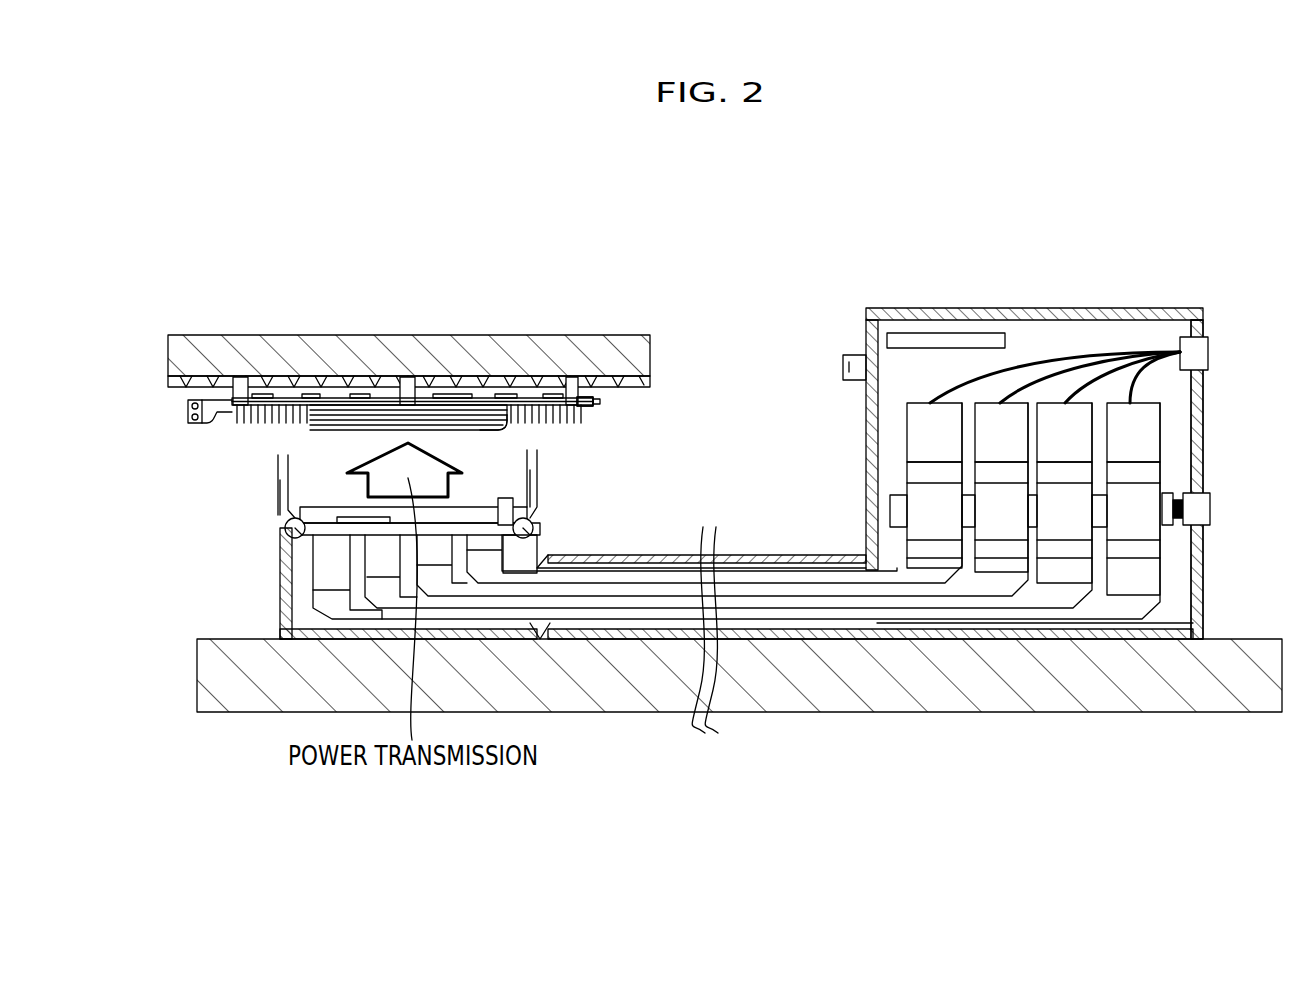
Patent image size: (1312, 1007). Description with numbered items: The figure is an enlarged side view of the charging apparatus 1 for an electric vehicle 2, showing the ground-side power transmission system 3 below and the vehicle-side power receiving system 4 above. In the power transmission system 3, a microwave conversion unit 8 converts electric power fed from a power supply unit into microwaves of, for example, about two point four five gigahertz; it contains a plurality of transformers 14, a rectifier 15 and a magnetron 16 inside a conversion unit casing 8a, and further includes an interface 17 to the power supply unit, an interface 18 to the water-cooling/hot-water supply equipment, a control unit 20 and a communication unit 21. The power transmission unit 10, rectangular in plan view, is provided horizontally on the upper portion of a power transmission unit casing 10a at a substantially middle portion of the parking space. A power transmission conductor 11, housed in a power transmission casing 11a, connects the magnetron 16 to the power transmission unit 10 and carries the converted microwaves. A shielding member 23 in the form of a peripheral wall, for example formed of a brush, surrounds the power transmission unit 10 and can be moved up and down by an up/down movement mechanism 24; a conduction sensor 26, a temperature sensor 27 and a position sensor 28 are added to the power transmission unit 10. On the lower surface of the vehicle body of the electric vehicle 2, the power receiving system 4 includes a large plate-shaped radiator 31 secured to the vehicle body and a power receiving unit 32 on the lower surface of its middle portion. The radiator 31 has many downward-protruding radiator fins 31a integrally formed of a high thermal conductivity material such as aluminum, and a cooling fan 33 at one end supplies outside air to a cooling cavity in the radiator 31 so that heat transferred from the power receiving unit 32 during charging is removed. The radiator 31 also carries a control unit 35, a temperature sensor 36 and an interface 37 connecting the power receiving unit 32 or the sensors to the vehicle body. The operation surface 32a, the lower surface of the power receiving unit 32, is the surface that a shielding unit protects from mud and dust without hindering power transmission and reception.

The charging apparatus 1 is at (725, 282).
The electric vehicle 2 is at (168, 352).
The power transmission system 3 is at (750, 442).
The power receiving system 4 is at (158, 399).
The microwave conversion unit 8 is at (1028, 308).
The conversion unit casing 8a is at (1130, 308).
The power transmission unit 10 is at (308, 497).
The power transmission unit casing 10a is at (282, 600).
The power transmission conductor 11 is at (670, 590).
The power transmission casing 11a is at (770, 555).
The transformers 14 is at (1143, 428).
The rectifier 15 is at (1143, 468).
The magnetron 16 is at (1143, 568).
The interface to the power supply unit 17 is at (1210, 355).
The interface to the water-cooling/hot-water supply equipment 18 is at (1210, 508).
The control unit 20 is at (921, 340).
The communication unit 21 is at (850, 355).
The shielding member 23 is at (288, 490).
The up/down movement mechanism 24 is at (292, 536).
The conduction sensor 26 is at (288, 496).
The temperature sensor 27 is at (360, 520).
The position sensor 28 is at (513, 500).
The radiator 31 is at (530, 395).
The radiator fins 31a is at (593, 402).
The power receiving unit 32 is at (345, 435).
The operation surface 32a is at (430, 431).
The cooling fan 33 is at (186, 412).
The control unit 35 is at (455, 394).
The temperature sensor 36 is at (308, 394).
The interface 37 is at (406, 394).